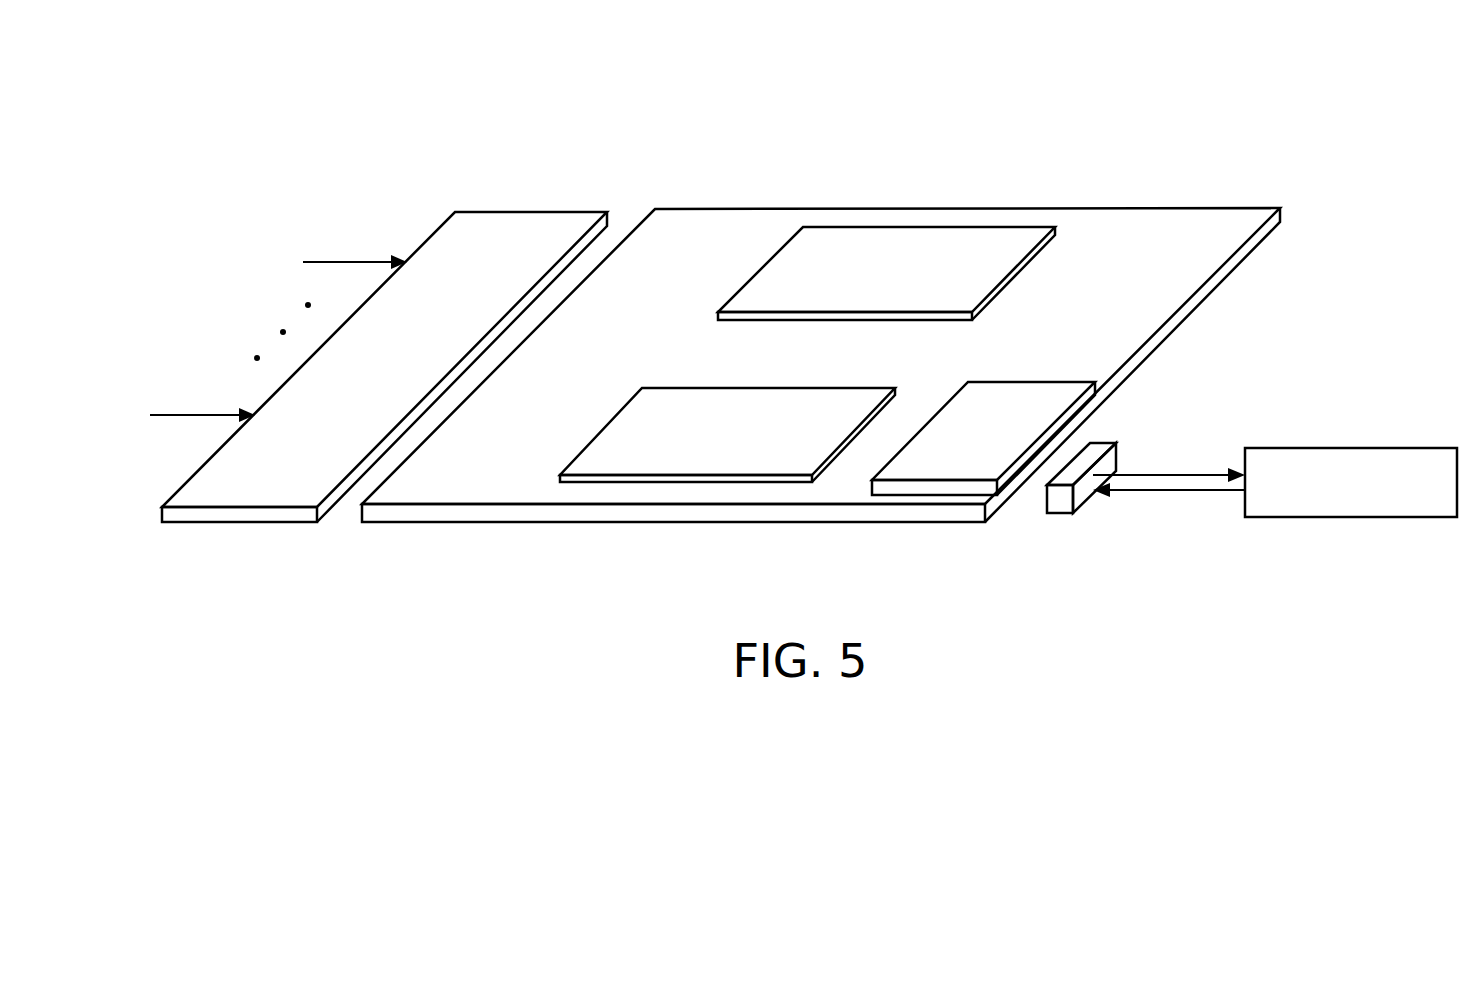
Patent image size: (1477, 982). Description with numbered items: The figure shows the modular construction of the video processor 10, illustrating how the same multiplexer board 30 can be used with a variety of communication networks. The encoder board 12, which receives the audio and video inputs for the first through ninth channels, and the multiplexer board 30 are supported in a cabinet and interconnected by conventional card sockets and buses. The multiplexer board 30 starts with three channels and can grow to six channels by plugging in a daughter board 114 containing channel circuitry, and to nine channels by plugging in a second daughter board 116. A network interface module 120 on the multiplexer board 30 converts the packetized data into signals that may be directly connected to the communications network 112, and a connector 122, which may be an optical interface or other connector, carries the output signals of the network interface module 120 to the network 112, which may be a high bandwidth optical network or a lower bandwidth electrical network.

The video processor 10 is at (941, 128).
The encoder board 12 is at (515, 230).
The multiplexer board 30 is at (1123, 230).
The daughter board 114 is at (912, 240).
The second daughter board 116 is at (775, 458).
The network interface module 120 is at (1057, 395).
The connector 122 is at (1060, 502).
The communications network 112 is at (1360, 448).